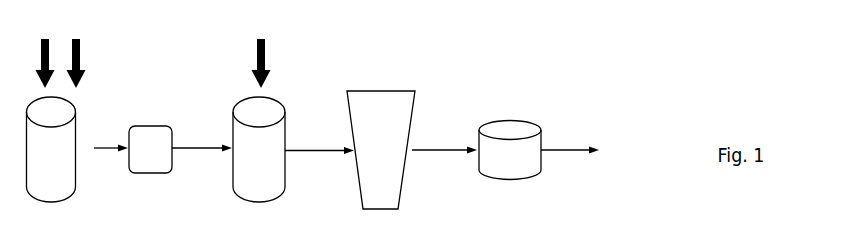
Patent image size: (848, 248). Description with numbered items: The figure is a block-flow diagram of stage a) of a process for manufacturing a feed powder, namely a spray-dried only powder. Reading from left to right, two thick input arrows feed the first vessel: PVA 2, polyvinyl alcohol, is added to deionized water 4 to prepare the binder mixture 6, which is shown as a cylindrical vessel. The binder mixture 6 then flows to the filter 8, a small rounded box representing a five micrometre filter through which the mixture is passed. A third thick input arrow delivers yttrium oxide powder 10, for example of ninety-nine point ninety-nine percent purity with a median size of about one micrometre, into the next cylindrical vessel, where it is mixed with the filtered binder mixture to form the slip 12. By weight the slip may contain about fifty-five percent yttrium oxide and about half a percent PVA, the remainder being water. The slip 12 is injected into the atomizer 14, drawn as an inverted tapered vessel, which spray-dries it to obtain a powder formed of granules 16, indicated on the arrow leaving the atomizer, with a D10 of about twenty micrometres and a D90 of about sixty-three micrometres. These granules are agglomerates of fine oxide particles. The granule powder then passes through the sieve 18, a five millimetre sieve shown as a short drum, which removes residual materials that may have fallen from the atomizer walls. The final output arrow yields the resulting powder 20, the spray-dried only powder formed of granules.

The PVA 2 is at (76, 50).
The deionized water 4 is at (45, 50).
The binder mixture 6 is at (51, 149).
The filter 8 is at (150, 149).
The yttrium oxide powder 10 is at (260, 50).
The slip 12 is at (259, 149).
The atomizer 14 is at (381, 150).
The granules 16 is at (444, 132).
The sieve 18 is at (510, 150).
The resulting powder 20 is at (591, 151).